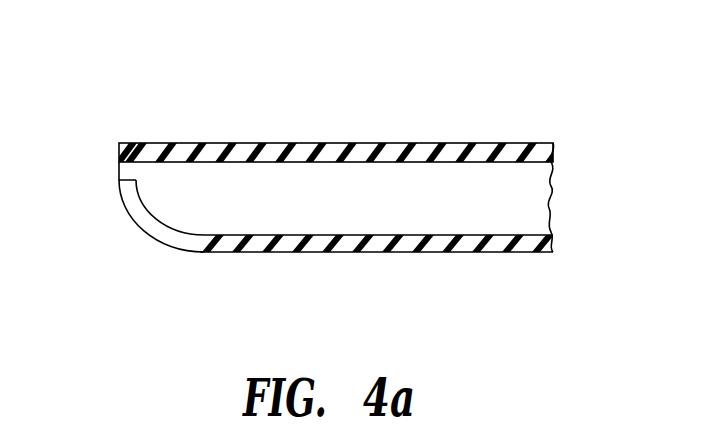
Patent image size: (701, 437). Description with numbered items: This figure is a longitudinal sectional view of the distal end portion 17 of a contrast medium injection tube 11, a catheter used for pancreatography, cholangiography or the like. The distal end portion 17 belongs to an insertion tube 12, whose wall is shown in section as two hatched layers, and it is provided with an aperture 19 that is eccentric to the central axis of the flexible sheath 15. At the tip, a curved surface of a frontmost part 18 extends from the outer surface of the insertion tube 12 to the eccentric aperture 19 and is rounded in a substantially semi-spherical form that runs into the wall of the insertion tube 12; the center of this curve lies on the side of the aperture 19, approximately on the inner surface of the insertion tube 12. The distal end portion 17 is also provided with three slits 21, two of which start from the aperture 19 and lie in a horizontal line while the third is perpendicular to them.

The contrast medium injection tube 11 is at (310, 90).
The insertion tube 12 is at (432, 138).
The flexible sheath 15 is at (537, 143).
The distal end portion 17 is at (212, 143).
The frontmost part 18 is at (136, 222).
The aperture 19 is at (118, 163).
The slits 21 is at (175, 243).